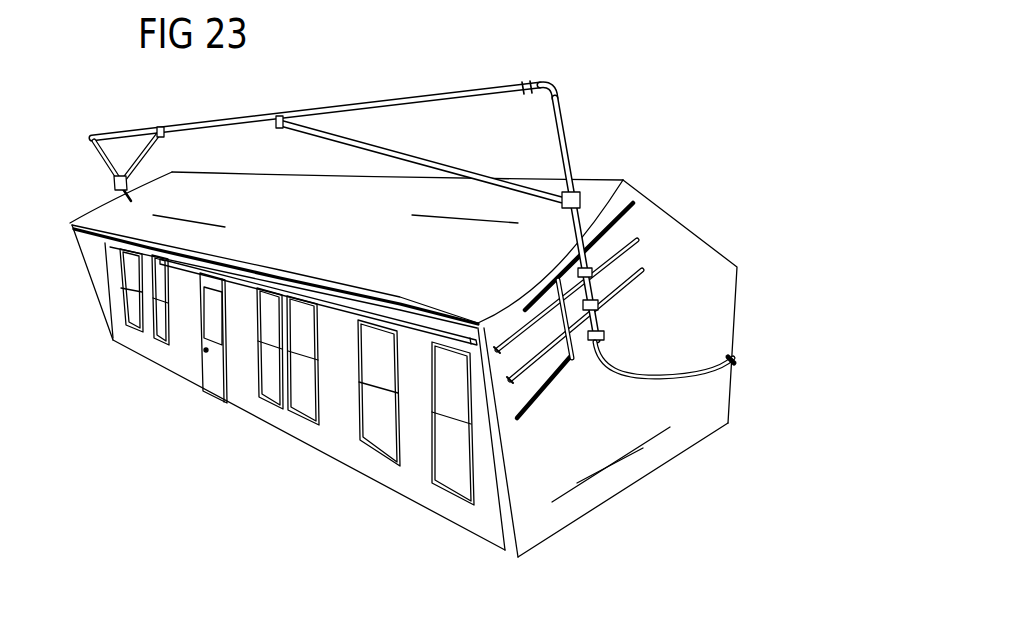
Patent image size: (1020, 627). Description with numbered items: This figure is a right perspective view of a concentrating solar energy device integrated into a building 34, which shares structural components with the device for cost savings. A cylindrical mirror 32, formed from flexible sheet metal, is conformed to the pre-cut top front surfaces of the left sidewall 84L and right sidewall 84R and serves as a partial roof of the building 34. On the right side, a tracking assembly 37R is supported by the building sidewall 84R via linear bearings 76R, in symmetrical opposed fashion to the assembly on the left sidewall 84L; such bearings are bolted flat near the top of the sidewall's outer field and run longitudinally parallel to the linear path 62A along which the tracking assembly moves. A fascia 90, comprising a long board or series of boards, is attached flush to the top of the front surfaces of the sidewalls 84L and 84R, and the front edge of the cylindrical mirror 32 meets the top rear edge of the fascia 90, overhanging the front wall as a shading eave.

The cylindrical mirror 32 is at (489, 264).
The building 34 is at (175, 430).
The tracking assembly 37R is at (598, 373).
The linear path 62A is at (518, 158).
The linear bearings 76R is at (634, 215).
The building sidewall 84L is at (95, 262).
The building sidewall 84R is at (698, 338).
The fascia 90 is at (400, 313).